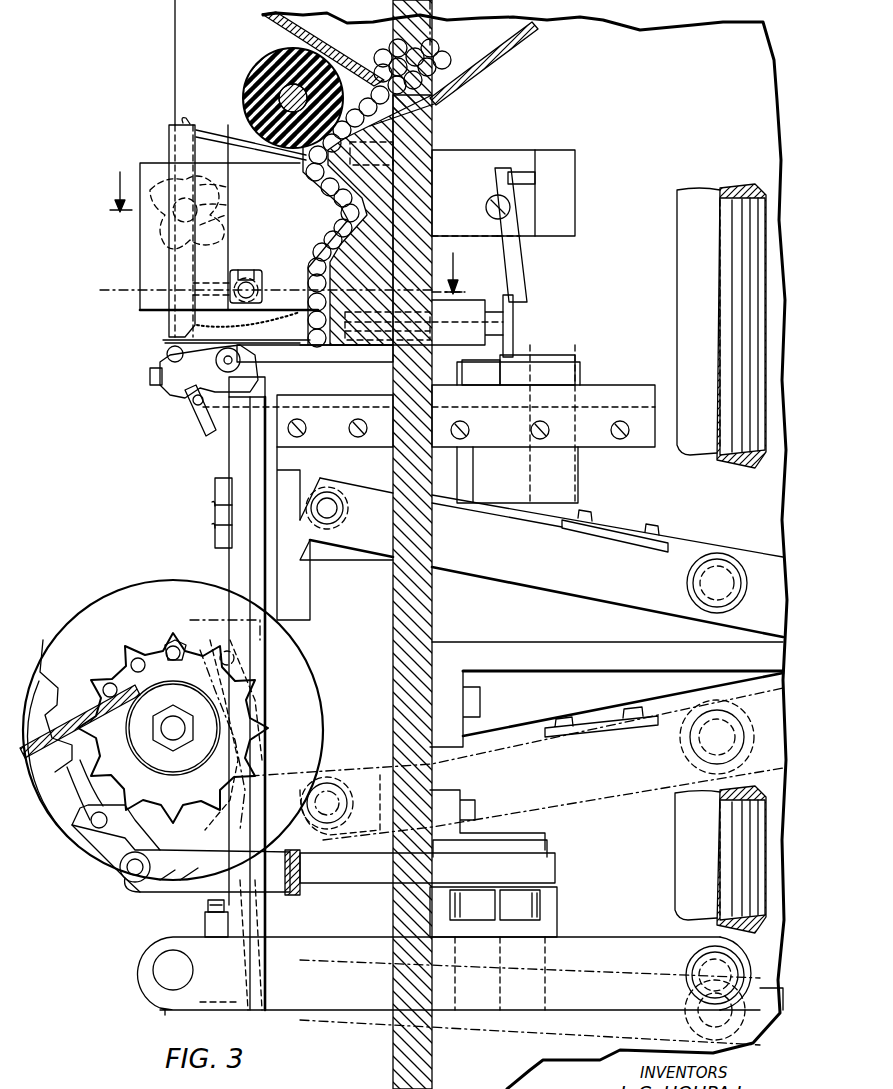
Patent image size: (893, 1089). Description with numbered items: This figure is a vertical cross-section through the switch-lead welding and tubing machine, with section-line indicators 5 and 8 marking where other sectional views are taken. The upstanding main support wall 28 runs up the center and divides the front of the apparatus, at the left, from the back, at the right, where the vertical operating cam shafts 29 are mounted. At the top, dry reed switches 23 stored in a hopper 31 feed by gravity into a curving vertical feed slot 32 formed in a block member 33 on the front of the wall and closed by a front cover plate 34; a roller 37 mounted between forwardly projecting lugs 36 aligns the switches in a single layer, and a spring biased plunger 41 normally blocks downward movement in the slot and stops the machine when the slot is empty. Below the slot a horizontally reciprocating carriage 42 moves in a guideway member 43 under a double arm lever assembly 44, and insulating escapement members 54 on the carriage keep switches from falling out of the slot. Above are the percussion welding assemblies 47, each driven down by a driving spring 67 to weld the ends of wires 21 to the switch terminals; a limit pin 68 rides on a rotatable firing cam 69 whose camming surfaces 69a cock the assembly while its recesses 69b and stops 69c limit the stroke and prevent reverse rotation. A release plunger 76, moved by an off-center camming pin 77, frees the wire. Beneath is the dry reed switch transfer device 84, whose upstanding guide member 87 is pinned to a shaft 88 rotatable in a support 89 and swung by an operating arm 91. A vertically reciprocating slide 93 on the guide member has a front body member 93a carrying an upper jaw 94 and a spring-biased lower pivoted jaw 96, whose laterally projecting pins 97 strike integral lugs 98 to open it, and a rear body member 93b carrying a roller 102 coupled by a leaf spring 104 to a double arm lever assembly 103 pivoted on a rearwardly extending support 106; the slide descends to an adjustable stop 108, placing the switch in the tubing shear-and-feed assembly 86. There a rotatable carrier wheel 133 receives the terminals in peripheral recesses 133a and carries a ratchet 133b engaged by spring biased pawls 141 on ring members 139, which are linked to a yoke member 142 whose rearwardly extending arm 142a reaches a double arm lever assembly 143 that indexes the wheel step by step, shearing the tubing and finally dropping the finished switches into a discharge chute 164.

The section line 5 is at (462, 2).
The section line 8 is at (287, 233).
The wires 21 is at (175, 60).
The dry reed switches 23 is at (438, 88).
The main support wall 28 is at (432, 134).
The operating cam shafts 29 is at (680, 226).
The hopper 31 is at (496, 40).
The vertical feed slot 32 is at (503, 193).
The block member 33 is at (436, 190).
The front cover plate 34 is at (370, 193).
The lugs 36 is at (368, 82).
The roller 37 is at (270, 66).
The spring biased plunger 41 is at (520, 318).
The carriage 42 is at (572, 398).
The guideway member 43 is at (642, 386).
The double arm lever assembly 44 is at (505, 370).
The percussion welding assemblies 47 is at (152, 314).
The escapement members 54 is at (278, 364).
The driving spring 67 is at (212, 136).
The limit pin 68 is at (251, 147).
The rotatable firing cam 69 is at (140, 229).
The peripheral camming surfaces 69a is at (230, 186).
The peripheral recesses 69b is at (230, 204).
The stops 69c is at (230, 216).
The release plunger 76 is at (231, 275).
The off-center camming pin 77 is at (258, 289).
The dry reed switch transfer device 84 is at (146, 473).
The tubing shear-and-feed assembly 86 is at (66, 588).
The upstanding guide member 87 is at (258, 648).
The shaft 88 is at (160, 978).
The support 89 is at (162, 1022).
The operating arm 91 is at (630, 940).
The vertically reciprocating slide 93 is at (214, 456).
The front body member 93a is at (215, 504).
The rear body member 93b is at (232, 520).
The upper jaw 94 is at (222, 346).
The lower pivoted jaw 96 is at (176, 392).
The laterally projecting pins 97 is at (196, 432).
The lugs 98 is at (195, 410).
The roller 102 is at (312, 494).
The double arm lever assembly 103 is at (534, 578).
The leaf spring 104 is at (534, 523).
The support 106 is at (548, 654).
The adjustable stop 108 is at (208, 905).
The carrier wheel 133 is at (100, 782).
The peripheral recesses 133a is at (178, 644).
The ratchet 133b is at (122, 628).
The ring members 139 is at (68, 790).
The spring biased pawls 141 is at (90, 840).
The yoke member 142 is at (178, 892).
The arm 142a is at (360, 870).
The double arm lever assembly 143 is at (547, 905).
The discharge chute 164 is at (79, 693).